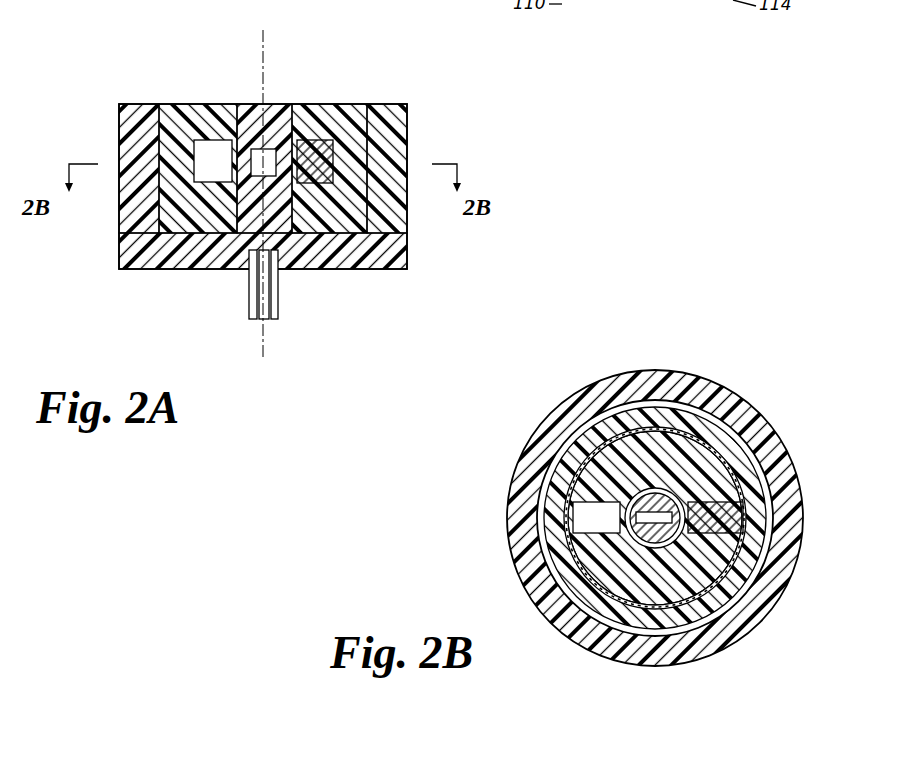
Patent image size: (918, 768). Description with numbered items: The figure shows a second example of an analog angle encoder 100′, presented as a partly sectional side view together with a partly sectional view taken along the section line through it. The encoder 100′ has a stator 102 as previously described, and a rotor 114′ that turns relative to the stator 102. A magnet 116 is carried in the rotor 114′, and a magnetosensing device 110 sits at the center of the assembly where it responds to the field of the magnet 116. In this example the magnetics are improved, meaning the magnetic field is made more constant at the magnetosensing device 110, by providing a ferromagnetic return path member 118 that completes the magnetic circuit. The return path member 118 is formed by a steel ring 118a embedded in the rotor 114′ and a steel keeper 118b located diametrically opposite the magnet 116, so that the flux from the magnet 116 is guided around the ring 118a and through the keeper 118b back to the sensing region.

In FIG. 2A, the analog angle encoder 100′ is at (424, 99).
In FIG. 2A, the stator 102 is at (421, 261).
In FIG. 2B, the stator 102 is at (714, 364).
In FIG. 2A, the magnetosensing device 110 is at (260, 150).
In FIG. 2B, the magnetosensing device 110 is at (648, 540).
In FIG. 2A, the rotor 114′ is at (358, 93).
In FIG. 2B, the rotor 114′ is at (628, 390).
In FIG. 2A, the magnet 116 is at (213, 160).
In FIG. 2B, the magnet 116 is at (612, 531).
In FIG. 2B, the ferromagnetic return path member 118 is at (575, 458).
In FIG. 2A, the steel ring 118a is at (200, 170).
In FIG. 2B, the steel ring 118a is at (662, 556).
In FIG. 2A, the steel keeper 118b is at (316, 140).
In FIG. 2B, the steel keeper 118b is at (722, 536).